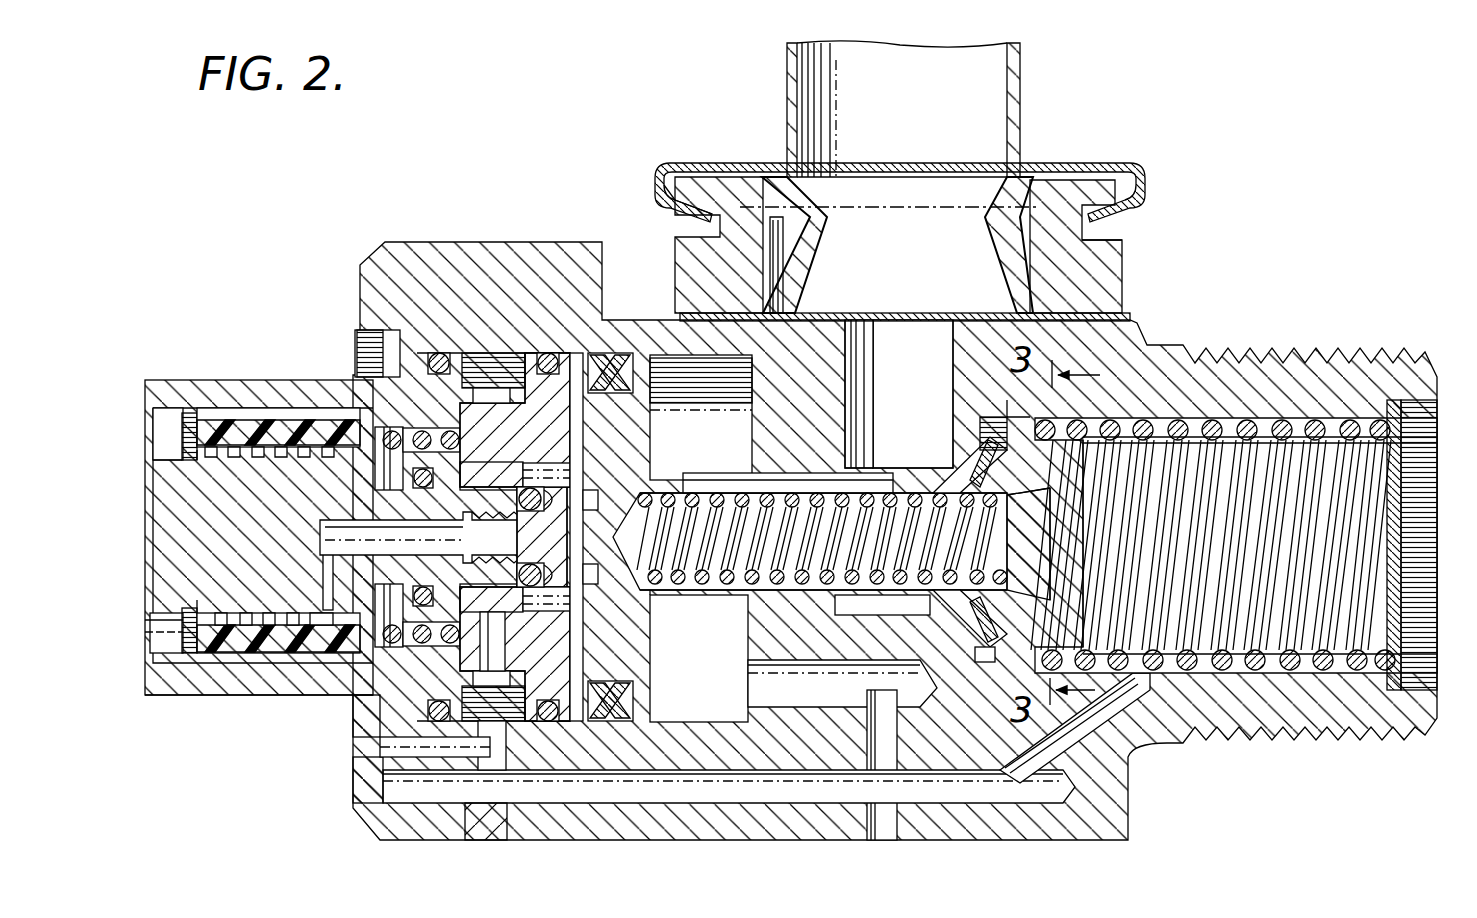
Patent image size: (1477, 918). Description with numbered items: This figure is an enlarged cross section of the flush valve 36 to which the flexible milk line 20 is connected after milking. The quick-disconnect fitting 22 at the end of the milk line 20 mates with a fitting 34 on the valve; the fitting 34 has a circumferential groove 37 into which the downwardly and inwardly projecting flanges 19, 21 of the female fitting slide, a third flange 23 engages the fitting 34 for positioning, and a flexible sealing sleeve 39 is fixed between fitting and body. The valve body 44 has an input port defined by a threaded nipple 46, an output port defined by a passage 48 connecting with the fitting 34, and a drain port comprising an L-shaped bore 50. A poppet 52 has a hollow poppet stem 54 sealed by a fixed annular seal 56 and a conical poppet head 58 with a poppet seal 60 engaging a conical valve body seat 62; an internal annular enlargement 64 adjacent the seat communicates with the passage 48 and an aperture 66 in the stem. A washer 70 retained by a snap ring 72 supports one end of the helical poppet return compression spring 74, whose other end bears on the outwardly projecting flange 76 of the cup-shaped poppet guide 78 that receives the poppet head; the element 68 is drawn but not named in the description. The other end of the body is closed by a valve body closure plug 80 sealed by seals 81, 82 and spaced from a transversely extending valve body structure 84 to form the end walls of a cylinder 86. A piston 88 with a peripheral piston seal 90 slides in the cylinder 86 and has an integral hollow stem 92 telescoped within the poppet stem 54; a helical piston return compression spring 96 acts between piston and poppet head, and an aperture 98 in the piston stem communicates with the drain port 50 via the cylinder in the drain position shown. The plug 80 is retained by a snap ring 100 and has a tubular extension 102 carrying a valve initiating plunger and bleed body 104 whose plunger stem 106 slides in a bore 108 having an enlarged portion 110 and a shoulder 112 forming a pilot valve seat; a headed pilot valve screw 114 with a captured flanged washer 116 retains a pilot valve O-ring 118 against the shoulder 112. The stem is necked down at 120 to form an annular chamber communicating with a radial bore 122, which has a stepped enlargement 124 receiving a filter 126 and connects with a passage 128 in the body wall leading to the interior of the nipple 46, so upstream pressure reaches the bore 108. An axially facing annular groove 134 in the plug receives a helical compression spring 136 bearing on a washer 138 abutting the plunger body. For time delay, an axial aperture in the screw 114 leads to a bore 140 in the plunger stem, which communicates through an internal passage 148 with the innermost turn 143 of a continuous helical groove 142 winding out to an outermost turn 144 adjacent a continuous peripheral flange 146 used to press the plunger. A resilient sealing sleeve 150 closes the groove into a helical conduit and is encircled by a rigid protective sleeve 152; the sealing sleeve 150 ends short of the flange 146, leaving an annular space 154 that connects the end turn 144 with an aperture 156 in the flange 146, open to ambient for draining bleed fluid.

The flange 19 is at (1120, 215).
The flexible milk line 20 is at (785, 100).
The flange 21 is at (690, 210).
The quick-disconnect fitting 22 is at (1040, 95).
The third flange 23 is at (882, 222).
The mating fitting 34 is at (1120, 295).
The flush valve 36 is at (435, 205).
The circumferential groove 37 is at (1115, 240).
The flexible sealing sleeve 39 is at (1005, 202).
The valve body 44 is at (752, 840).
The threaded nipple 46 is at (1243, 742).
The passage 48 is at (847, 362).
The L-shaped bore 50 is at (882, 790).
The poppet 52 is at (980, 660).
The poppet stem 54 is at (770, 680).
The fixed annular seal 56 is at (770, 448).
The conical poppet head 58 is at (962, 625).
The poppet seal 60 is at (998, 460).
The conical valve body seat 62 is at (960, 445).
The internal annular enlargement 64 is at (878, 614).
The aperture 66 is at (932, 490).
The spring 68 is at (1213, 545).
The washer 70 is at (1400, 660).
The snap ring 72 is at (1402, 683).
The helical poppet return compression spring 74 is at (1083, 620).
The outwardly projecting flange 76 is at (1013, 415).
The poppet guide 78 is at (1062, 568).
The valve body closure plug 80 is at (576, 446).
The seal 81 is at (438, 352).
The seal 82 is at (548, 352).
The transversely extending valve body structure 84 is at (840, 398).
The cylinder 86 is at (745, 420).
The piston 88 is at (640, 420).
The peripheral piston seal 90 is at (652, 705).
The hollow stem 92 is at (668, 478).
The helical piston return compression spring 96 is at (742, 498).
The aperture 98 is at (667, 612).
The snap ring 100 is at (360, 336).
The tubular extension 102 is at (283, 690).
The valve initiating plunger and bleed body 104 is at (172, 522).
The plunger stem 106 is at (420, 560).
The bore 108 is at (452, 490).
The enlarged portion 110 is at (568, 470).
The shoulder 112 is at (548, 462).
The headed pilot valve screw 114 is at (590, 492).
The captured flanged washer 116 is at (528, 600).
The pilot valve O-ring 118 is at (553, 582).
The necked down portion 120 is at (483, 588).
The bore 122 is at (500, 652).
The stepped enlargement 124 is at (518, 721).
The filter 126 is at (462, 690).
The passage 128 is at (470, 740).
The axially facing annular groove 134 is at (408, 448).
The helical compression spring 136 is at (462, 685).
The washer 138 is at (378, 476).
The bore 140 is at (320, 525).
The continuous helical groove 142 is at (280, 458).
The innermost turn 143 is at (330, 458).
The outermost turn 144 is at (203, 610).
The continuous peripheral flange 146 is at (160, 422).
The internal passage 148 is at (323, 570).
The sealing sleeve 150 is at (222, 425).
The protective sleeve 152 is at (282, 420).
The annular space 154 is at (160, 615).
The aperture 156 is at (160, 628).